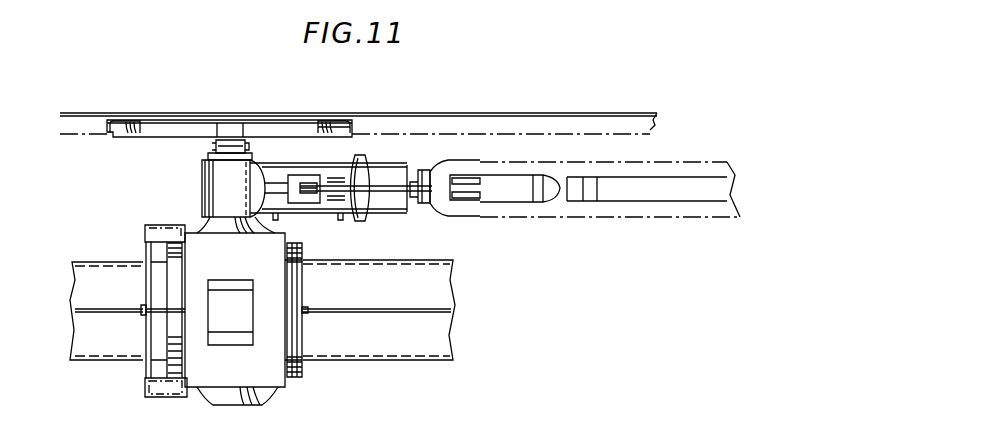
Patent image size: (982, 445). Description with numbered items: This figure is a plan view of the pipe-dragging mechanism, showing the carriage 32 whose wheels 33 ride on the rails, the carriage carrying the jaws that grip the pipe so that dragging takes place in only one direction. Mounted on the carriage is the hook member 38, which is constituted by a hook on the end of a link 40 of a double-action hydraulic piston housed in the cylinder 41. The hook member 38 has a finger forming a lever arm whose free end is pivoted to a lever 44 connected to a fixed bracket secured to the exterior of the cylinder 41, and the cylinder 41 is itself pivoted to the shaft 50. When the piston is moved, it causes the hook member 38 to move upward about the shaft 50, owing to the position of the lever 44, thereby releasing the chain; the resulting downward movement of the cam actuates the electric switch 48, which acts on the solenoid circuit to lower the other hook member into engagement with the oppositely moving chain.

The carriage 32 is at (276, 135).
The wheels 33 is at (333, 124).
The hook member 38 is at (513, 187).
The link 40 is at (413, 173).
The cylinder 41 is at (323, 210).
The lever 44 is at (432, 188).
The electric switch 48 is at (307, 178).
The shaft 50 is at (229, 178).